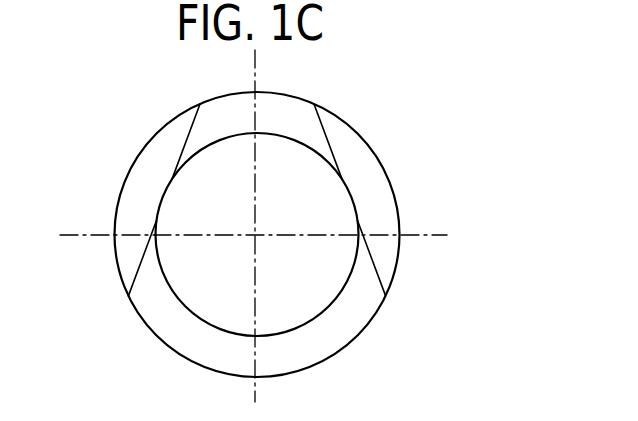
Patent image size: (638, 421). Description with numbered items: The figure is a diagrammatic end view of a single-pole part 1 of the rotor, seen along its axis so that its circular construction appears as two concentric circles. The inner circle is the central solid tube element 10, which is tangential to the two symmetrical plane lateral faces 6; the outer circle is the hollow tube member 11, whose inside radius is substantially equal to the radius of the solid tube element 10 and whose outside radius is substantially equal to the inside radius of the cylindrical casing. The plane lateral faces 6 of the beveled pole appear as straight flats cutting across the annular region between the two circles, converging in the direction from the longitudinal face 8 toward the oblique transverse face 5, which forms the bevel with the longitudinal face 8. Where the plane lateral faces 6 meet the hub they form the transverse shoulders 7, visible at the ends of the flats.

The single-pole part 1 is at (260, 226).
The oblique transverse face 5 is at (320, 277).
The plane lateral faces 6 is at (338, 143).
The transverse shoulders 7 is at (151, 171).
The longitudinal face 8 is at (338, 352).
The central solid tube element 10 is at (190, 282).
The hollow tube member 11 is at (196, 341).